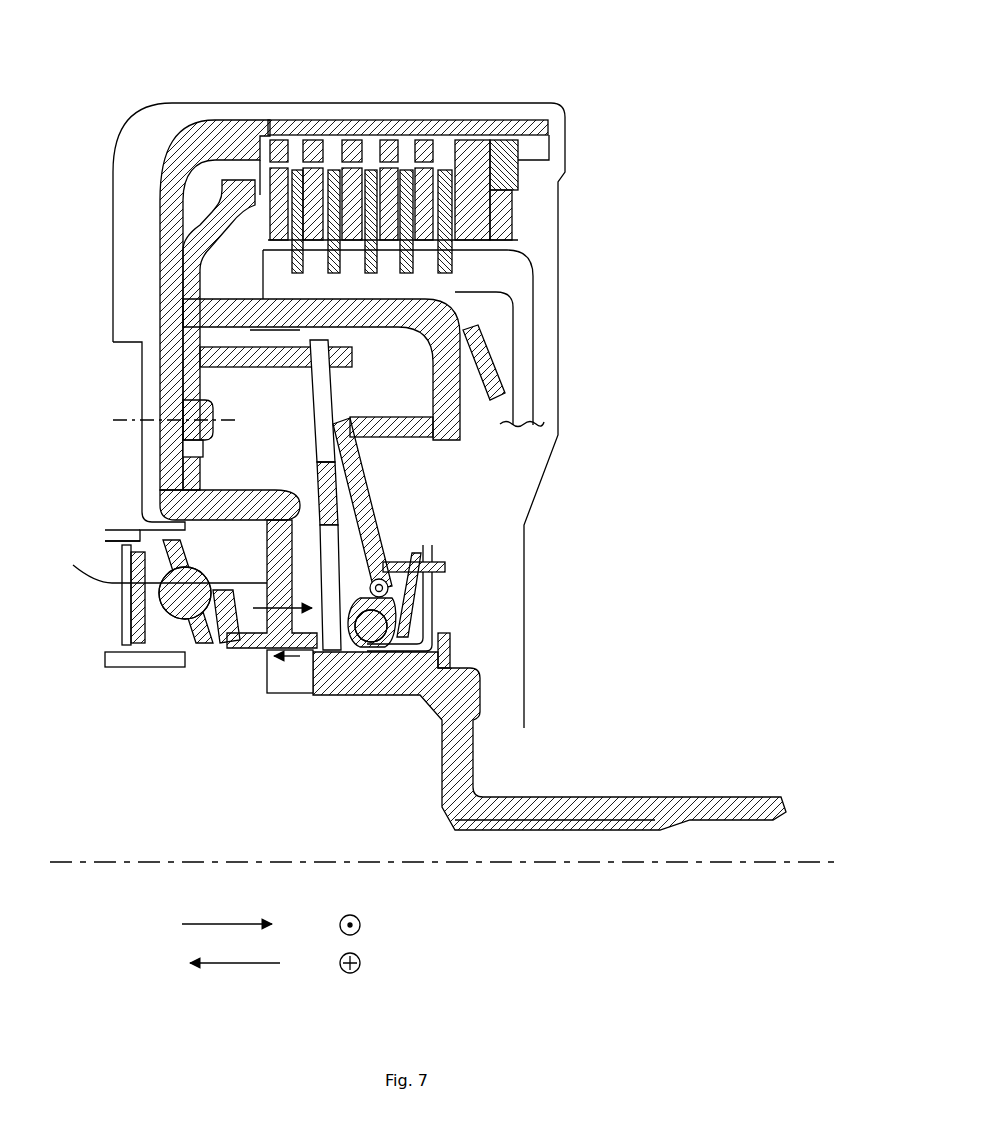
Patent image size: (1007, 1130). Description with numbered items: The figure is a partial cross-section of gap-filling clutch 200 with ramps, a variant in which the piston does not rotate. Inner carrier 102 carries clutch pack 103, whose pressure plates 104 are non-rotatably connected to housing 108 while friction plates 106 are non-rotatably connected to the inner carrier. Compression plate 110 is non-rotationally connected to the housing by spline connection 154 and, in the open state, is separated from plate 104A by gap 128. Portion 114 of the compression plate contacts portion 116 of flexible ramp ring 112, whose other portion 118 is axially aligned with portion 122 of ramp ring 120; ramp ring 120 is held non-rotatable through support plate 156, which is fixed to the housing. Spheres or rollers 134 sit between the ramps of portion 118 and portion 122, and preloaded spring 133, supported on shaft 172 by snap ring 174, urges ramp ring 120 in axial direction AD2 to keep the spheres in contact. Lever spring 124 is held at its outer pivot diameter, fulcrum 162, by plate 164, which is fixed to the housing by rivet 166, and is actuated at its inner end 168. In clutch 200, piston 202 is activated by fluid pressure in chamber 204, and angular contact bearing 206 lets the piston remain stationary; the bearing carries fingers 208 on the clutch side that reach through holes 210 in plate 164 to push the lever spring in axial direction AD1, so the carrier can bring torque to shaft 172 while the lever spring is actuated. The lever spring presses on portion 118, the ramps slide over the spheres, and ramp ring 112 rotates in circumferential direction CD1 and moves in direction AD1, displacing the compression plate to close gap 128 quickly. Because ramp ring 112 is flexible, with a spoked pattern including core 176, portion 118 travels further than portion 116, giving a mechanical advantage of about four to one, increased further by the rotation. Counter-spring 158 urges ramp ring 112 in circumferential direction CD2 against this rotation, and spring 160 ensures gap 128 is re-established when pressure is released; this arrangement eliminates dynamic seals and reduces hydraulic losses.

The inner carrier 102 is at (526, 252).
The clutch pack 103 is at (337, 118).
The pressure plates 104 is at (426, 127).
The plate 104A is at (278, 143).
The friction plates 106 is at (405, 123).
The housing 108 is at (490, 128).
The compression plate 110 is at (212, 208).
The ramp ring 112 is at (382, 500).
The portion 114 is at (466, 437).
The portion 116 is at (403, 404).
The portion 118 is at (382, 620).
The ramp ring 120 is at (402, 548).
The portion 122 is at (438, 668).
The lever spring 124 is at (305, 394).
The gap 128 is at (263, 197).
The spring 133 is at (432, 612).
The spheres or rollers 134 is at (400, 650).
The spline connection 154 is at (233, 150).
The support plate 156 is at (440, 597).
The counter-spring 158 is at (392, 587).
The spring 160 is at (490, 362).
The fulcrum 162 is at (305, 335).
The plate 164 is at (215, 358).
The rivet 166 is at (190, 405).
The end 168 is at (365, 655).
The shaft 172 is at (633, 797).
The snap ring 174 is at (450, 640).
The core 176 is at (318, 485).
The gap-filling clutch 200 is at (609, 38).
The piston 202 is at (110, 633).
The chamber 204 is at (113, 595).
The angular contact bearing 206 is at (138, 518).
The fingers 208 is at (243, 648).
The holes 210 is at (293, 655).
The axis of rotation AR is at (86, 862).
The axial direction AD1 is at (205, 924).
The axial direction AD2 is at (253, 963).
The circumferential direction CD1 is at (352, 974).
The circumferential direction CD2 is at (352, 914).